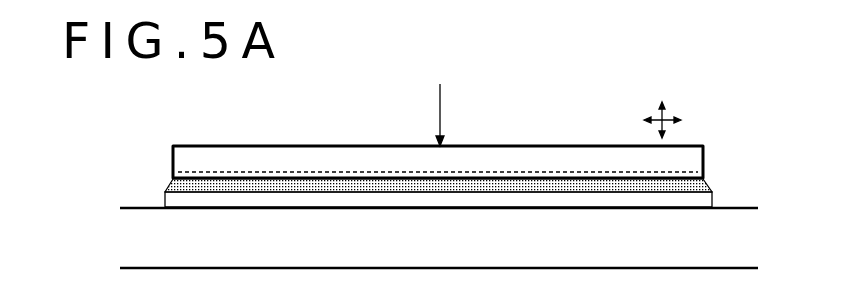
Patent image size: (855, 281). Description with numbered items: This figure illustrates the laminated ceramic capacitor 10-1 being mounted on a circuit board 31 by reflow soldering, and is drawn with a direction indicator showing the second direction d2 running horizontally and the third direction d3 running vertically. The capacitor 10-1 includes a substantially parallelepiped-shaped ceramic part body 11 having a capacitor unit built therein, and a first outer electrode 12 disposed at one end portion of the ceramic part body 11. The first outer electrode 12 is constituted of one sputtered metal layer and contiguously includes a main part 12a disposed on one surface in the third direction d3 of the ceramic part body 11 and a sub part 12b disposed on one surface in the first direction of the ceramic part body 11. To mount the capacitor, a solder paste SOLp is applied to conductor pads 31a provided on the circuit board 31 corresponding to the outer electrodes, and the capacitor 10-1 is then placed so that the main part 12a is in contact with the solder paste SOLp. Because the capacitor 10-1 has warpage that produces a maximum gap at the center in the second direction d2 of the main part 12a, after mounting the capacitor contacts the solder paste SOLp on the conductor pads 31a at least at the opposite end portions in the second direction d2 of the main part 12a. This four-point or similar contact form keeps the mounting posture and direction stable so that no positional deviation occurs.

The laminated ceramic capacitor 10-1 is at (408, 142).
The ceramic part body 11 is at (411, 146).
The first outer electrode 12 is at (438, 135).
The main part 12a is at (527, 167).
The sub part 12b is at (603, 156).
The solder paste SOLp is at (217, 139).
The circuit board 31 is at (128, 236).
The conductor pads 31a is at (167, 199).
The third direction d3 is at (662, 109).
The second direction d2 is at (673, 122).